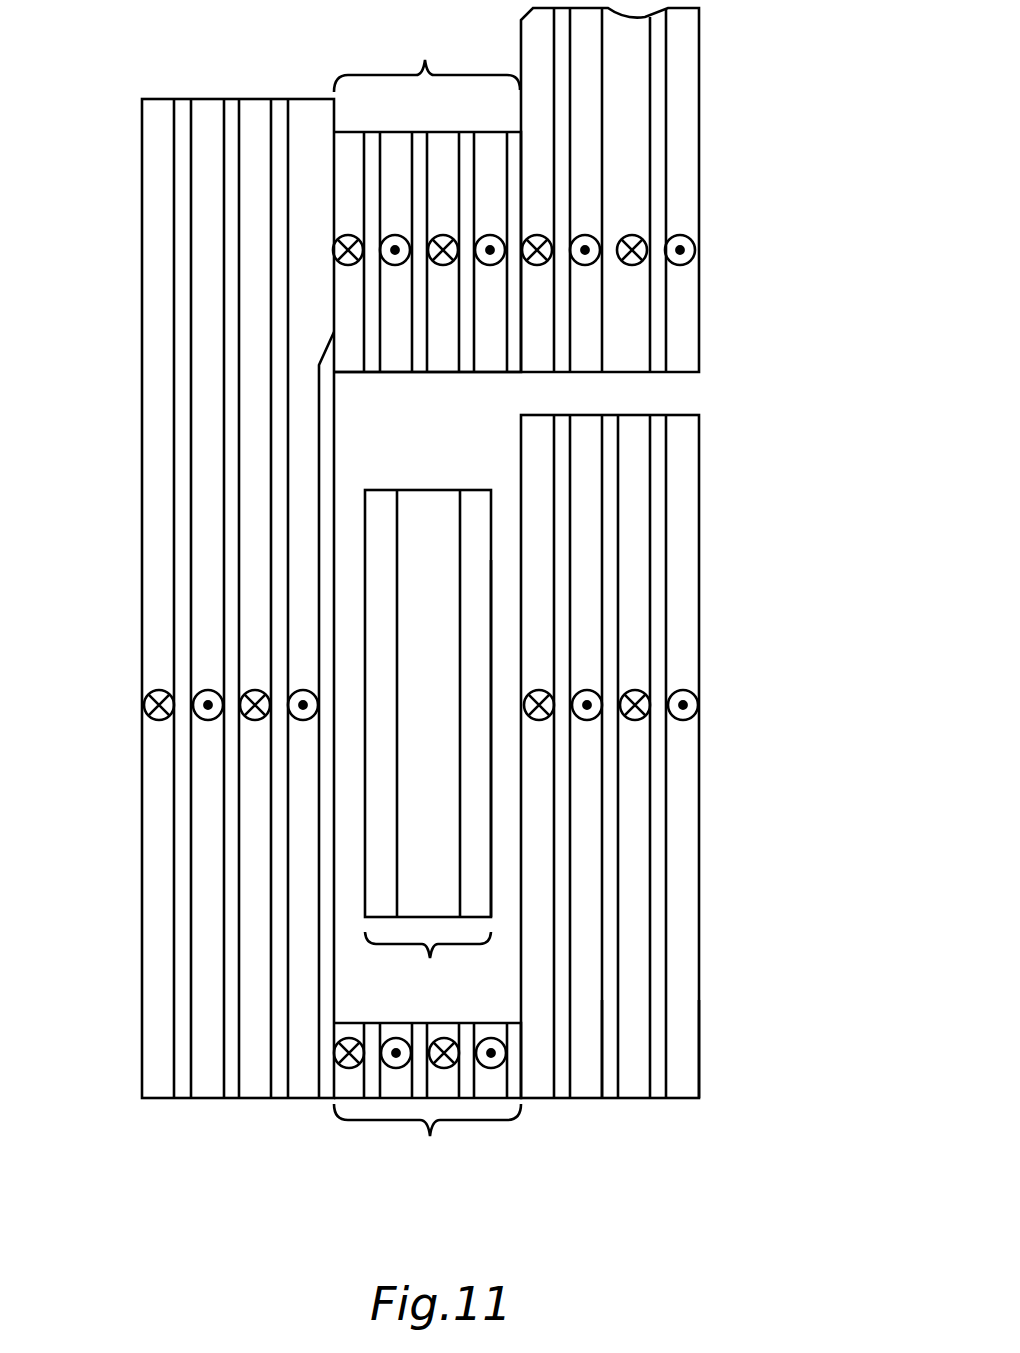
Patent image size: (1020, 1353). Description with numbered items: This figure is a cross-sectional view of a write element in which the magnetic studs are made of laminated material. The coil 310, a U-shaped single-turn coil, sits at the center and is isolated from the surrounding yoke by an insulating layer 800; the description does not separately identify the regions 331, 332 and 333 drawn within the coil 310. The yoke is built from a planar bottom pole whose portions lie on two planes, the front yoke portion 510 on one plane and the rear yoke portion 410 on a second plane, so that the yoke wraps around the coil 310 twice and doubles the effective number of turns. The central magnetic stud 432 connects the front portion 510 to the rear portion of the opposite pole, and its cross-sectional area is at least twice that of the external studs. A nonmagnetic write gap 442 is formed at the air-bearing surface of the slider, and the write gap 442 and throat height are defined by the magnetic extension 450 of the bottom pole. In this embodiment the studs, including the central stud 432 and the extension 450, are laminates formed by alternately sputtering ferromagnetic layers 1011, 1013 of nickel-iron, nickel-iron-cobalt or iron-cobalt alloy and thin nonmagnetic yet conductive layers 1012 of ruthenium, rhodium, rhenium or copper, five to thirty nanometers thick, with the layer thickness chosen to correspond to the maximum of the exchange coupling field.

The single-turn coil 310 is at (424, 745).
The first magnet layer 331 is at (472, 603).
The second magnet layer 332 is at (440, 547).
The third magnet layer 333 is at (373, 603).
The rear yoke portion of bottom pole 410 is at (695, 794).
The central magnetic stud 432 is at (427, 199).
The nonmagnetic write gap 442 is at (327, 1100).
The magnetic extension of bottom pole 450 is at (427, 1098).
The front yoke portion of bottom pole 510 is at (152, 760).
The insulating layer 800 is at (393, 440).
The ferromagnetic layer 1011 is at (697, 1087).
The nonmagnetic layer 1012 is at (610, 1087).
The ferromagnetic layer 1013 is at (647, 1087).